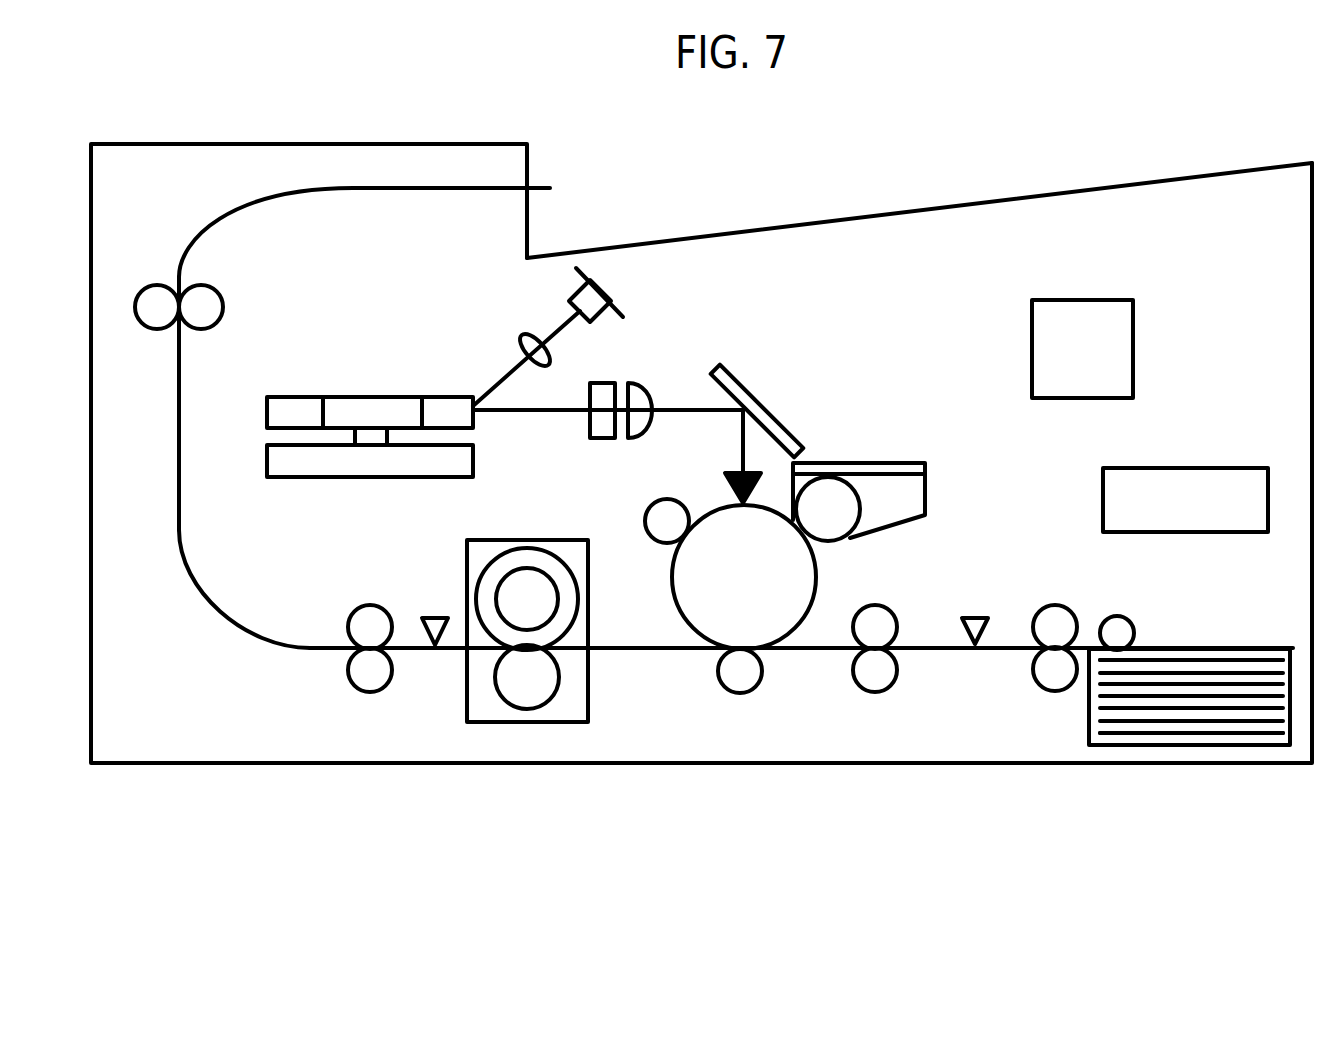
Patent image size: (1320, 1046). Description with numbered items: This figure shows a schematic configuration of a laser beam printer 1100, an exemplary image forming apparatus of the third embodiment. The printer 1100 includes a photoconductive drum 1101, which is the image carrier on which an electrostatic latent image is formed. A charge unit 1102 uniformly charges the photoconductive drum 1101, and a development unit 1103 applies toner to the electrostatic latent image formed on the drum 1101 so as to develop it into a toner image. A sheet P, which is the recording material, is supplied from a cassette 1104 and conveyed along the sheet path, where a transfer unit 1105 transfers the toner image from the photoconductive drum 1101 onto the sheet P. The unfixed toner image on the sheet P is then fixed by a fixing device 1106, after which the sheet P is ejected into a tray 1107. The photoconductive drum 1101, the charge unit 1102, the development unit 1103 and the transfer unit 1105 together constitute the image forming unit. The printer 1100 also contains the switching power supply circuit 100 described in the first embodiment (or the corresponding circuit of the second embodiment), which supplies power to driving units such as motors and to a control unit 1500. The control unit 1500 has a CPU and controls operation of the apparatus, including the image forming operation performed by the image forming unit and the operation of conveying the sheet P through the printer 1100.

The laser beam printer 1100 is at (703, 763).
The tray 1107 is at (720, 234).
The photoconductive drum 1101 is at (676, 582).
The charge unit 1102 is at (642, 510).
The development unit 1103 is at (925, 478).
The cassette 1104 is at (1268, 630).
The transfer unit 1105 is at (718, 684).
The fixing device 1106 is at (466, 700).
The control unit 1500 is at (1133, 358).
The switching power supply circuit 100 is at (1207, 432).
The sheet P is at (1145, 735).